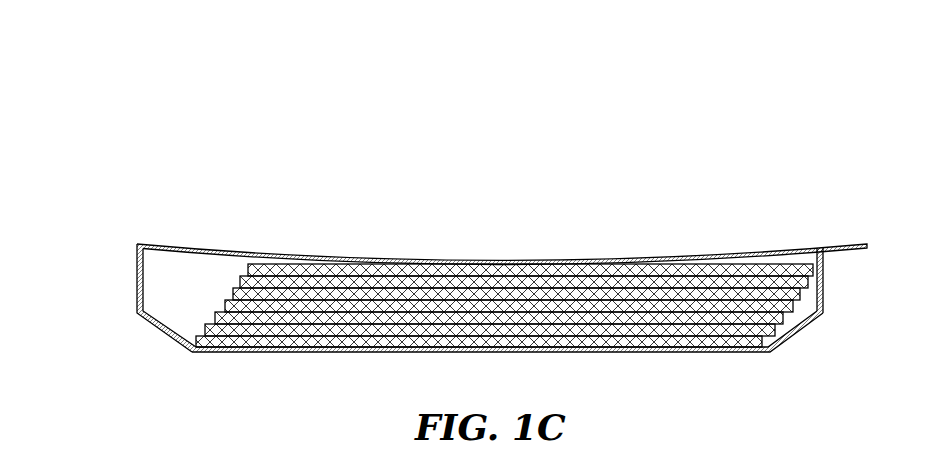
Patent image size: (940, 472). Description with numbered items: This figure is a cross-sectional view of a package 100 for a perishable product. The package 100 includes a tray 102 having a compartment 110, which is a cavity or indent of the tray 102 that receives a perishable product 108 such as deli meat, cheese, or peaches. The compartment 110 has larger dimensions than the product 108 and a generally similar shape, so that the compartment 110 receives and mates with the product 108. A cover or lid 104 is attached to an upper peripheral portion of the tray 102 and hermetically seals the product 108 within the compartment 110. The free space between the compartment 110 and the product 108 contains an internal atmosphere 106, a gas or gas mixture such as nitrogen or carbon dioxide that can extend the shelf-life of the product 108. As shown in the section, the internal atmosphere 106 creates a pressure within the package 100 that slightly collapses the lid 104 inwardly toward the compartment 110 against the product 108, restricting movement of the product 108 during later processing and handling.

The package 100 is at (198, 119).
The tray 102 is at (822, 283).
The lid 104 is at (297, 257).
The internal atmosphere 106 is at (165, 290).
The perishable product 108 is at (677, 278).
The compartment 110 is at (793, 337).